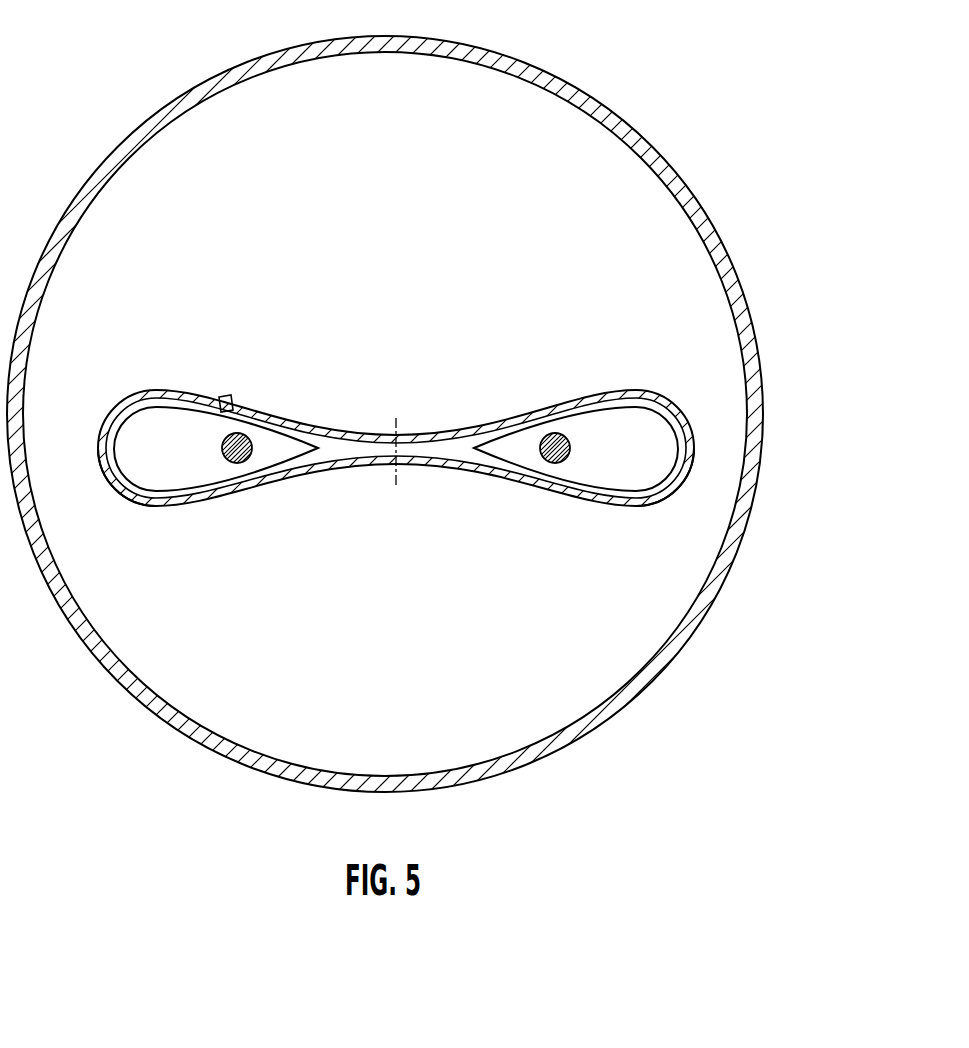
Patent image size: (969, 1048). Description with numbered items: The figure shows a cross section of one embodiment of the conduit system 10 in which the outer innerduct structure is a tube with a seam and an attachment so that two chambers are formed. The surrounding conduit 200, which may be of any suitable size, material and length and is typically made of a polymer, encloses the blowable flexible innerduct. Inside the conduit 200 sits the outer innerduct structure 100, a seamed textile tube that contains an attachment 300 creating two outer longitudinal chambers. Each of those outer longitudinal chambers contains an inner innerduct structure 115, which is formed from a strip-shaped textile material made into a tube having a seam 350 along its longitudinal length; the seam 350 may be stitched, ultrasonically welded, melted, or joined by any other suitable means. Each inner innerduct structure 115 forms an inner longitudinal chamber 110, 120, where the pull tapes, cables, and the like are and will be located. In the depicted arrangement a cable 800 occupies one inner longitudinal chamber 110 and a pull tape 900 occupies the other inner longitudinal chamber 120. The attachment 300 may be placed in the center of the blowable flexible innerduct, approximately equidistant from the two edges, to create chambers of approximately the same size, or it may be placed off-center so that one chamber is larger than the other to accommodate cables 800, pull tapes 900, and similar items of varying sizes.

The conduit system 10 is at (80, 70).
The conduit 200 is at (537, 68).
The outer innerduct structure 100 is at (448, 435).
The inner longitudinal chamber 110 is at (630, 462).
The inner longitudinal chamber 120 is at (195, 462).
The inner innerduct structure 115 is at (163, 496).
The attachment 300 is at (400, 472).
The seam 350 is at (225, 395).
The cable 800 is at (544, 458).
The pull tape 900 is at (248, 458).